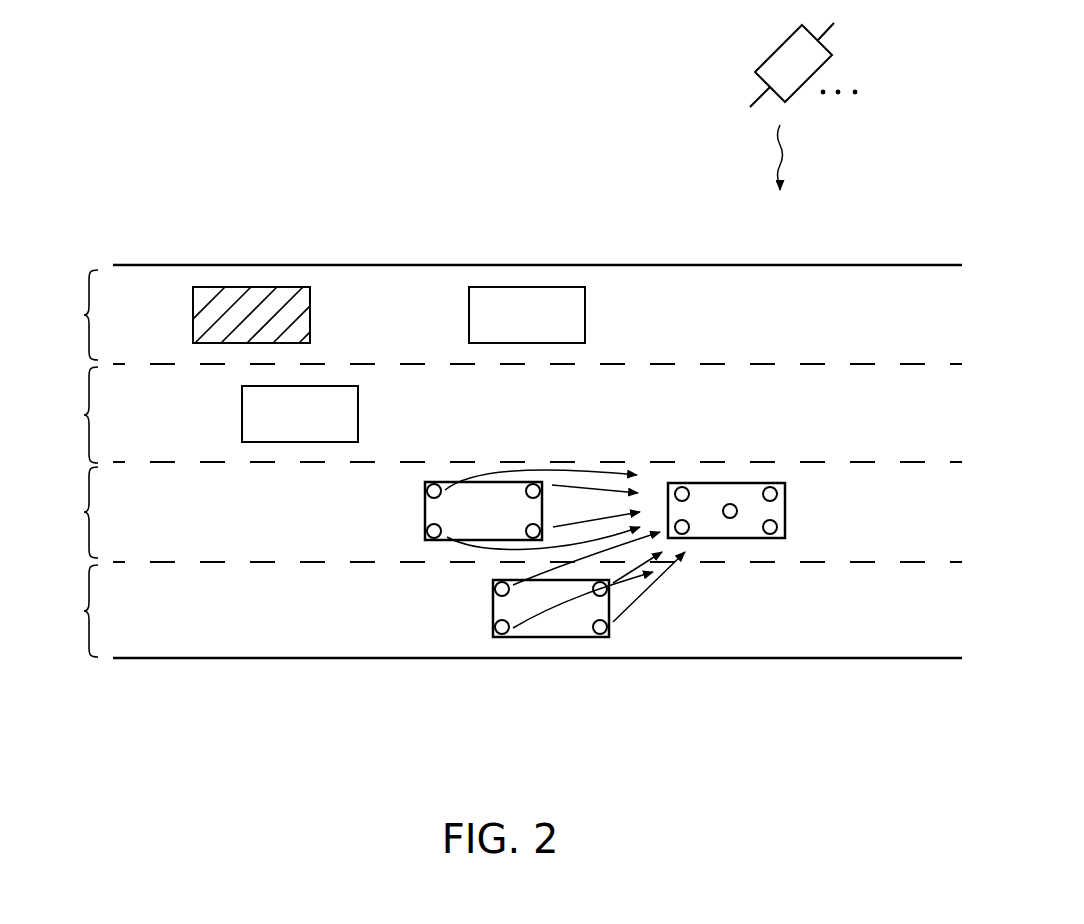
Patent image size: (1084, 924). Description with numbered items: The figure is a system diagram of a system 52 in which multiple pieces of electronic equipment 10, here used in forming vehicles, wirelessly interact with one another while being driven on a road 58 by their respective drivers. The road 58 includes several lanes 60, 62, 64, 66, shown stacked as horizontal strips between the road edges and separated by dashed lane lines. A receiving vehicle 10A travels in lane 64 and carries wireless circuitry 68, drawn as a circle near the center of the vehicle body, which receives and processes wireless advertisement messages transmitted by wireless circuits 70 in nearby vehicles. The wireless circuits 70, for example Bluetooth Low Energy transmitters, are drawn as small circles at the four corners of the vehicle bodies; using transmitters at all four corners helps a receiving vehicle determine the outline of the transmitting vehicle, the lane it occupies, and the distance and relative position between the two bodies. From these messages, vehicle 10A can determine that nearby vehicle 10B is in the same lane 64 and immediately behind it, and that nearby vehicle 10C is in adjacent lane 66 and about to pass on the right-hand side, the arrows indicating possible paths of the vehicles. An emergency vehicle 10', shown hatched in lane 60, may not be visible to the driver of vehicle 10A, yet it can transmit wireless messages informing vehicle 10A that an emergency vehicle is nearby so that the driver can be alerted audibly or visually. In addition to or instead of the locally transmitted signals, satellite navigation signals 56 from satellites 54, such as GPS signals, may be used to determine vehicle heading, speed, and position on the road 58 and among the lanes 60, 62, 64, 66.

The electronic equipment 10 is at (431, 362).
The emergency vehicle 10' is at (262, 311).
The receiving vehicle 10A is at (738, 483).
The nearby vehicle 10B is at (495, 482).
The nearby vehicle 10C is at (568, 637).
The system 52 is at (370, 117).
The satellites 54 is at (812, 70).
The satellite navigation system signals 56 is at (780, 150).
The road 58 is at (230, 660).
The lane 60 is at (70, 315).
The lane 62 is at (502, 413).
The lane 64 is at (502, 510).
The lane 66 is at (502, 609).
The wireless circuitry 68 is at (733, 518).
The wireless circuits 70 is at (427, 531).